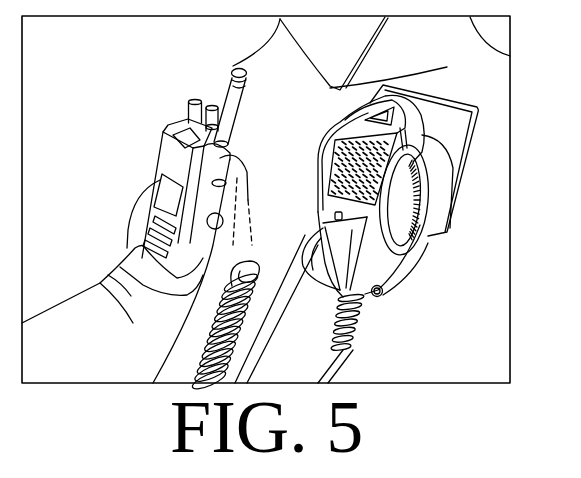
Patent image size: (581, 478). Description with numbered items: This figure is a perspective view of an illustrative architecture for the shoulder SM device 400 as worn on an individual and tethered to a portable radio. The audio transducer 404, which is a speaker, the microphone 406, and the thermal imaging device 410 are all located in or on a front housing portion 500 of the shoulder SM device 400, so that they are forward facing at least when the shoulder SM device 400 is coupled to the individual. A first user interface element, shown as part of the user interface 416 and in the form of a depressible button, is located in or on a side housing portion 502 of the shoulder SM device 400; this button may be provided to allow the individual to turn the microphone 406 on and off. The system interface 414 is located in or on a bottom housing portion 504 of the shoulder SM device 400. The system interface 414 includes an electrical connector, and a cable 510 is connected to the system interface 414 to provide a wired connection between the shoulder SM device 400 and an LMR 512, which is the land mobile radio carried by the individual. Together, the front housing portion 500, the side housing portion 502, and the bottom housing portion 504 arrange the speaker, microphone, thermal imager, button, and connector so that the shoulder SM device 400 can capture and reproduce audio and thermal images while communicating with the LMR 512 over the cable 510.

The shoulder SM device 400 is at (343, 75).
The audio transducer 404 is at (341, 116).
The microphone 406 is at (328, 173).
The thermal imaging device 410 is at (326, 214).
The system interface 414 is at (380, 313).
The user interface 416 is at (421, 224).
The front housing portion 500 is at (300, 236).
The side housing portion 502 is at (417, 148).
The bottom housing portion 504 is at (334, 278).
The cable 510 is at (198, 343).
The LMR 512 is at (160, 182).